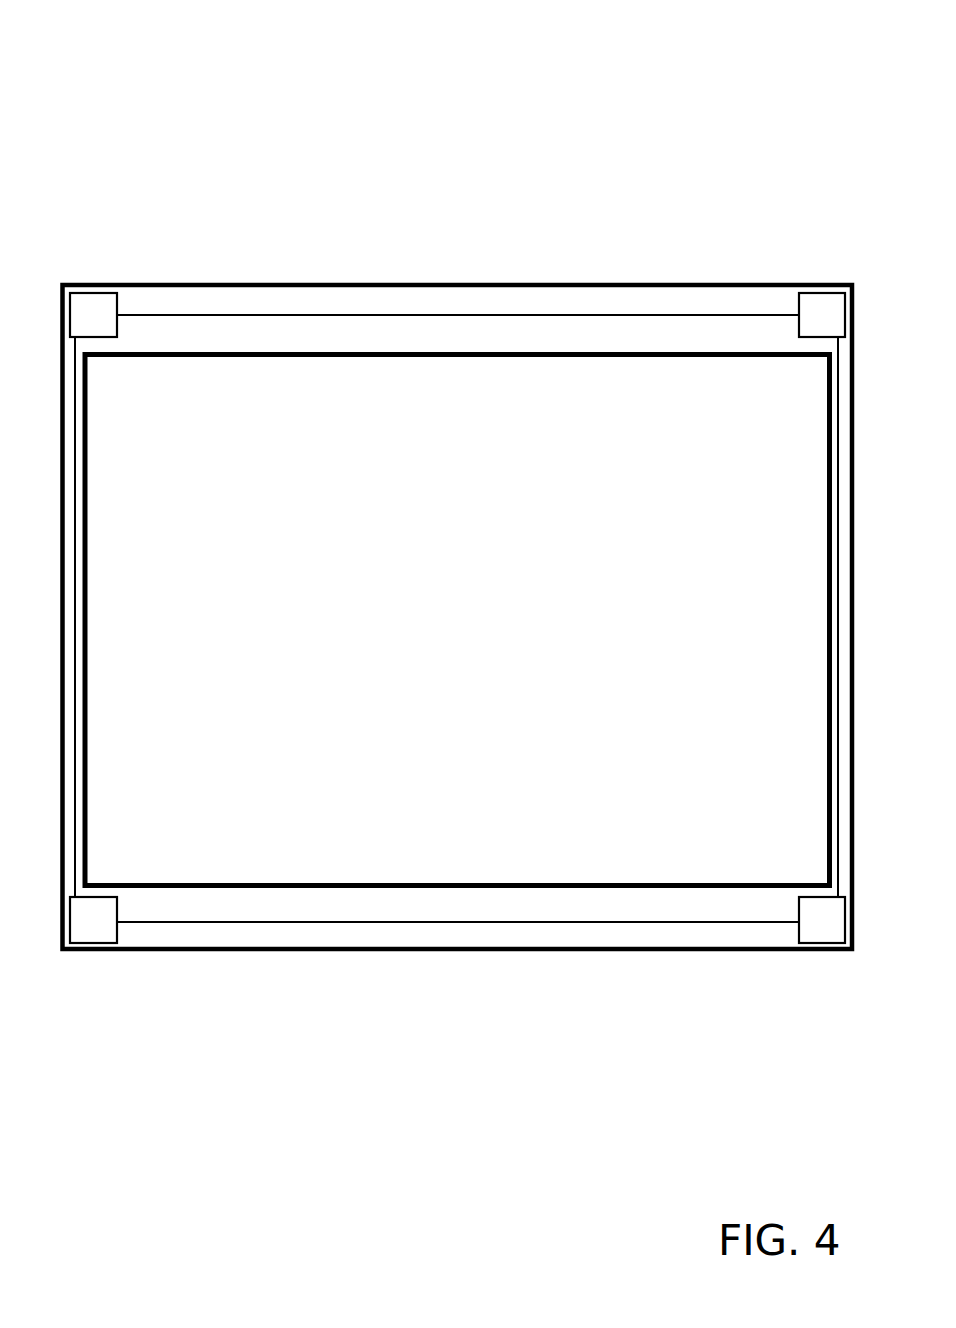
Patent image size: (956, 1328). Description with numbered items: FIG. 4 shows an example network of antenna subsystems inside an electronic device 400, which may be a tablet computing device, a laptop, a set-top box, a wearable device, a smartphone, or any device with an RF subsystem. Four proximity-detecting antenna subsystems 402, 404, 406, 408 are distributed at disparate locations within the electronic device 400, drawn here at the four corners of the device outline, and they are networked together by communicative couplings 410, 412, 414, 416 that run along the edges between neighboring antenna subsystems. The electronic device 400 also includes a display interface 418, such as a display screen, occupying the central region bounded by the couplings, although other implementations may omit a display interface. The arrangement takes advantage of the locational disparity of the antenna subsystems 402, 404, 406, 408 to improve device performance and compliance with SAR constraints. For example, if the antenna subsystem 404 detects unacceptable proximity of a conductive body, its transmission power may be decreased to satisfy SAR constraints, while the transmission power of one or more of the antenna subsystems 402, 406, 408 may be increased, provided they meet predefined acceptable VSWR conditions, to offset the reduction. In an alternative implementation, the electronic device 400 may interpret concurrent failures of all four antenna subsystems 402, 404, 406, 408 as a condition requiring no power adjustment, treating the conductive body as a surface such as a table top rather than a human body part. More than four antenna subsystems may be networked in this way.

The electronic device 400 is at (140, 50).
The antenna subsystem 402 is at (92, 293).
The antenna subsystem 404 is at (823, 293).
The antenna subsystem 406 is at (92, 943).
The antenna subsystem 408 is at (822, 943).
The communicative coupling 410 is at (429, 922).
The communicative coupling 412 is at (838, 595).
The communicative coupling 414 is at (88, 607).
The communicative coupling 416 is at (443, 315).
The display interface 418 is at (475, 644).